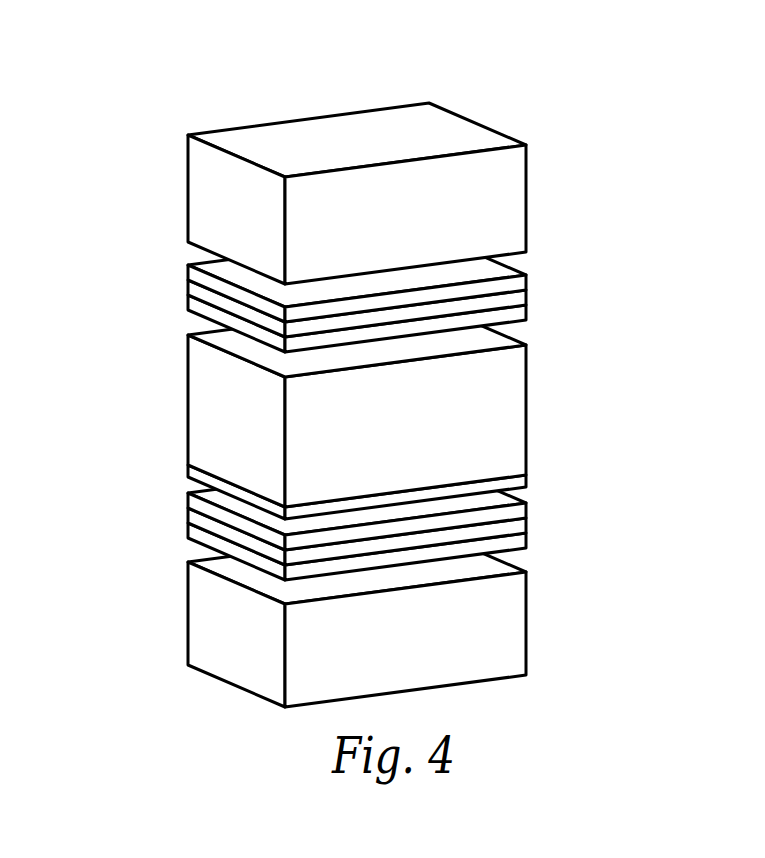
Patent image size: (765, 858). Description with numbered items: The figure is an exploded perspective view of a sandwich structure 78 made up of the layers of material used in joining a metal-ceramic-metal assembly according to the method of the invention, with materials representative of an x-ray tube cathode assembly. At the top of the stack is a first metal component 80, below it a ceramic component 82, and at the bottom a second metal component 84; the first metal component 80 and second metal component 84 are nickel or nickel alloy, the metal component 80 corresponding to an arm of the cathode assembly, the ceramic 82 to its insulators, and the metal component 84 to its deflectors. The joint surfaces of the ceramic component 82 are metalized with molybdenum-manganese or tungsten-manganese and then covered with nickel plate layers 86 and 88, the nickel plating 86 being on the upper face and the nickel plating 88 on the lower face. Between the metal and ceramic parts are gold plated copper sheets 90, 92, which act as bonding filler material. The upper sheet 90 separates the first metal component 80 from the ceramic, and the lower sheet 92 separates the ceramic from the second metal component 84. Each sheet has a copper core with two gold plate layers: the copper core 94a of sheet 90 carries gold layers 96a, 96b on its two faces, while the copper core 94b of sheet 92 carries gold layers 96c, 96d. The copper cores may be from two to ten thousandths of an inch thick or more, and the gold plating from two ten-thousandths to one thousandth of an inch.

The sandwich structure 78 is at (332, 387).
The first metal component 80 is at (445, 137).
The ceramic component 82 is at (356, 411).
The second metal component 84 is at (487, 663).
The nickel plate layer 86 is at (528, 347).
The nickel plate layer 88 is at (188, 468).
The gold plated copper sheet 90 is at (363, 292).
The gold plated copper sheet 92 is at (349, 544).
The copper core 94a is at (193, 287).
The copper core 94b is at (329, 550).
The gold layer 96a is at (528, 280).
The gold layer 96b is at (528, 310).
The gold layer 96c is at (528, 507).
The gold layer 96d is at (528, 537).